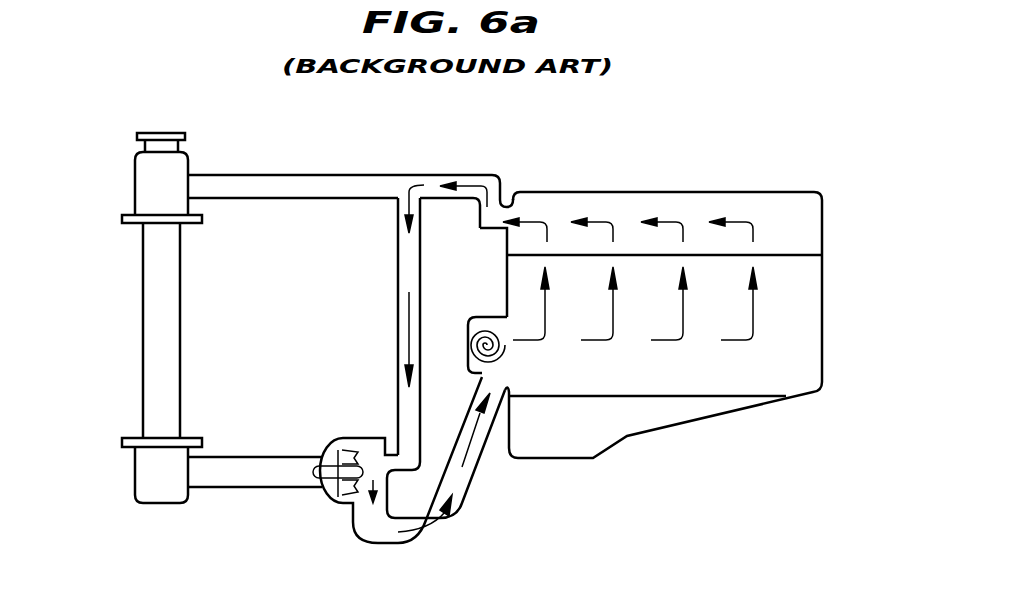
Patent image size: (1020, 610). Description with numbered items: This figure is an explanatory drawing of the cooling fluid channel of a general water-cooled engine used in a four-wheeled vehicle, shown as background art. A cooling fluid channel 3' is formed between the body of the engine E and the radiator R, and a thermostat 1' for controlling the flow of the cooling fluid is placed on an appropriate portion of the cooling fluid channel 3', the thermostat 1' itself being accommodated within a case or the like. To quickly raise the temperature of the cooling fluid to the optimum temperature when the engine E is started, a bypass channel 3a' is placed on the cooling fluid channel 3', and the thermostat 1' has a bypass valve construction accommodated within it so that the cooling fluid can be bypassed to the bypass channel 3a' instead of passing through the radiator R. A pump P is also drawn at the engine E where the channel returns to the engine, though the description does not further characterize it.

The radiator R is at (135, 185).
The coolant pipes 3' is at (350, 331).
The bypass pipe 3a' is at (377, 323).
The engine E is at (648, 192).
The water pump P is at (473, 318).
The thermostat 1' is at (409, 470).